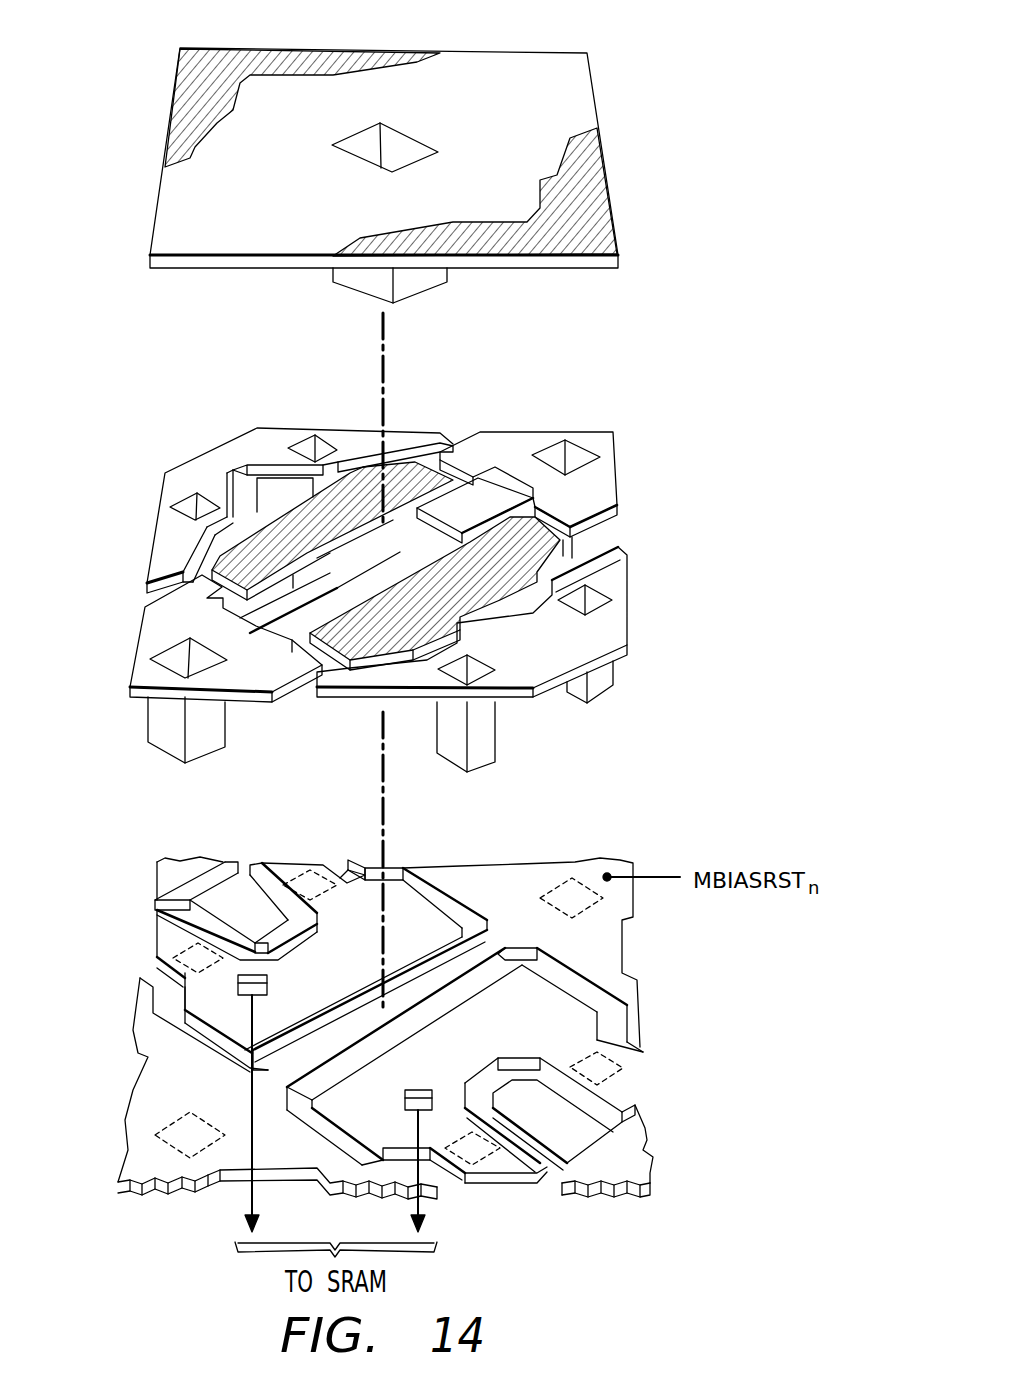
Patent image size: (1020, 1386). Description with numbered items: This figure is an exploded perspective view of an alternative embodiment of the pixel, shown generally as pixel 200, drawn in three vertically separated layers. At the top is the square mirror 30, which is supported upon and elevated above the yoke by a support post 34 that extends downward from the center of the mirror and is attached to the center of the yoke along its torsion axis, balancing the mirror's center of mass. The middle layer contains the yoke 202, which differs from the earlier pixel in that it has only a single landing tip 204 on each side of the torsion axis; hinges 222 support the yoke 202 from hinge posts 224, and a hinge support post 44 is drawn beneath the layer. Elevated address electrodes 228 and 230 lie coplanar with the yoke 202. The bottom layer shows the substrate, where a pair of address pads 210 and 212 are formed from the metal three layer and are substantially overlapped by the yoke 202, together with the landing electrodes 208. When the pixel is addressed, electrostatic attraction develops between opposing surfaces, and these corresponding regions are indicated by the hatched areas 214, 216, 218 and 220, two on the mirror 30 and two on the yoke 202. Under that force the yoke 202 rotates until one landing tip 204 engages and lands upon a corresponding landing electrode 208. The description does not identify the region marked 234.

The mirror 30 is at (391, 134).
The support post 34 is at (365, 283).
The hinge support post 44 is at (165, 740).
The pixel 200 is at (690, 404).
The yoke 202 is at (454, 566).
The landing tip 204 is at (273, 480).
The landing electrode 208 is at (258, 905).
The address pad 210 is at (563, 1000).
The address pad 212 is at (162, 942).
The hatched area 214 is at (427, 457).
The hatched area 216 is at (540, 570).
The hatched area 218 is at (177, 113).
The hatched area 220 is at (598, 175).
The hinge 222 is at (502, 487).
The hinge post 224 is at (588, 435).
The elevated address electrode 228 is at (192, 468).
The elevated address electrode 230 is at (612, 540).
The substrate region 234 is at (138, 1117).